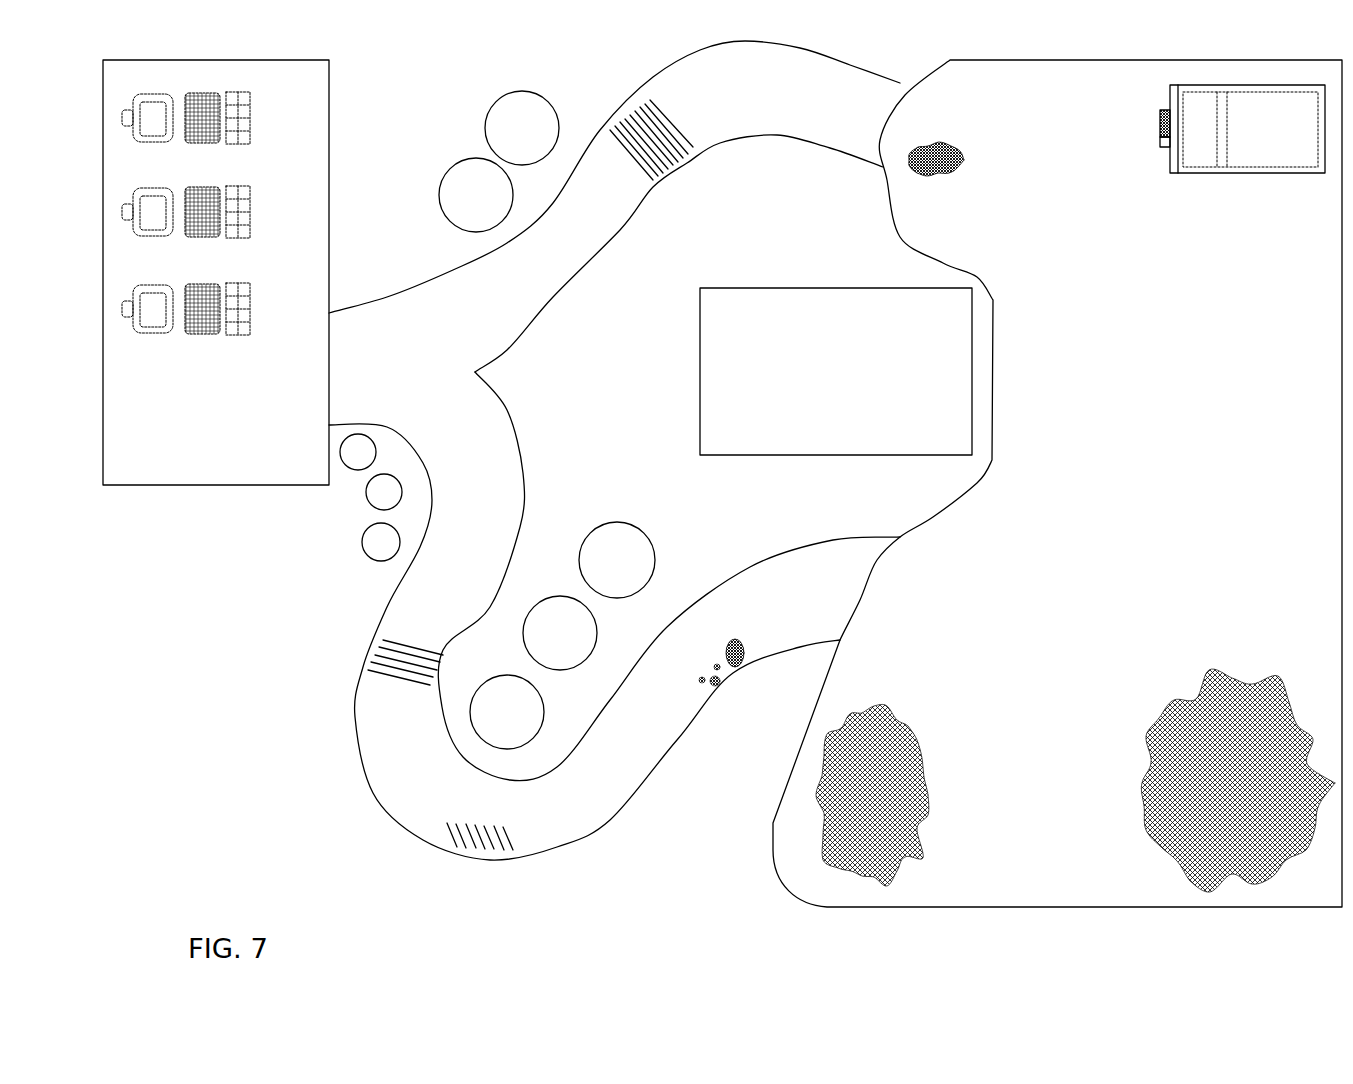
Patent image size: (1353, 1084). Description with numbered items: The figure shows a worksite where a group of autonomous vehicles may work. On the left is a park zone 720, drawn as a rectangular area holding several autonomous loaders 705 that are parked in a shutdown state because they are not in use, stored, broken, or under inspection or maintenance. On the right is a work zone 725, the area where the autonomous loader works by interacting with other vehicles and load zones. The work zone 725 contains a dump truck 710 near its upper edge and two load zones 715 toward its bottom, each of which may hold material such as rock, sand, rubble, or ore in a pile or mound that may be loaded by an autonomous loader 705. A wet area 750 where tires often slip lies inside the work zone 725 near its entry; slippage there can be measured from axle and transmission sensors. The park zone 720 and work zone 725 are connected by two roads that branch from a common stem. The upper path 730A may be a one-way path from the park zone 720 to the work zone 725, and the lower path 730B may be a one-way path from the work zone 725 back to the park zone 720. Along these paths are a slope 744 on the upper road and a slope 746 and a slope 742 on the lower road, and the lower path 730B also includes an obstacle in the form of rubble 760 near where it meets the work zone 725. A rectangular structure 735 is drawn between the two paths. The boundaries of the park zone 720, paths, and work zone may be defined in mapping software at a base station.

The autonomous loader 705 is at (127, 108).
The dump truck 710 is at (1162, 125).
The load zone 715 is at (920, 743).
The park zone 720 is at (156, 461).
The work zone 725 is at (1292, 436).
The path 730A is at (615, 216).
The path 730B is at (453, 801).
The building / structure 735 is at (835, 375).
The slope 742 is at (450, 837).
The slope 744 is at (660, 173).
The slope 746 is at (363, 657).
The wet area 750 is at (953, 177).
The rubble 760 is at (730, 673).